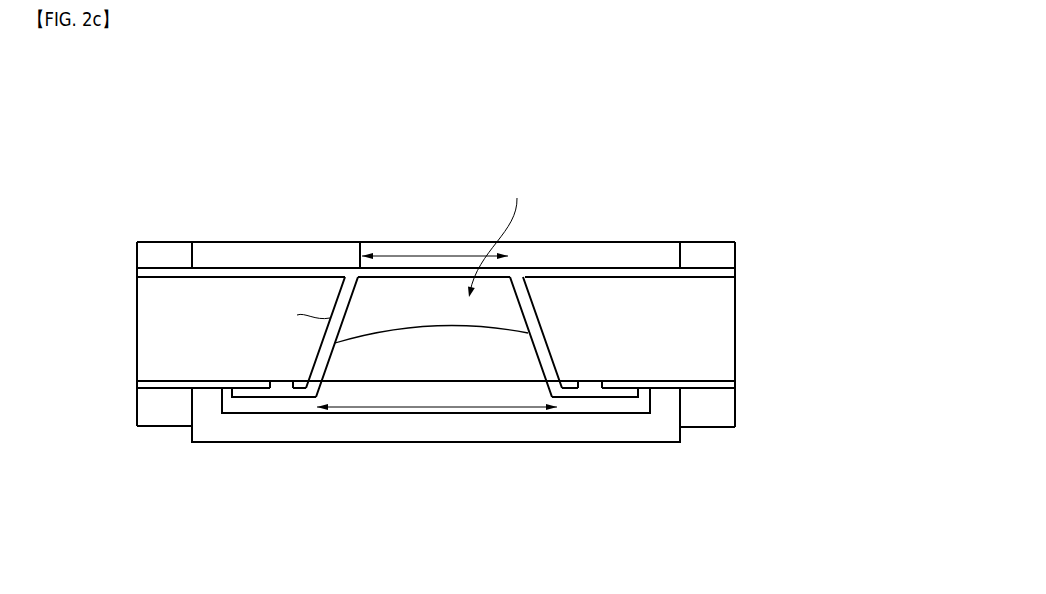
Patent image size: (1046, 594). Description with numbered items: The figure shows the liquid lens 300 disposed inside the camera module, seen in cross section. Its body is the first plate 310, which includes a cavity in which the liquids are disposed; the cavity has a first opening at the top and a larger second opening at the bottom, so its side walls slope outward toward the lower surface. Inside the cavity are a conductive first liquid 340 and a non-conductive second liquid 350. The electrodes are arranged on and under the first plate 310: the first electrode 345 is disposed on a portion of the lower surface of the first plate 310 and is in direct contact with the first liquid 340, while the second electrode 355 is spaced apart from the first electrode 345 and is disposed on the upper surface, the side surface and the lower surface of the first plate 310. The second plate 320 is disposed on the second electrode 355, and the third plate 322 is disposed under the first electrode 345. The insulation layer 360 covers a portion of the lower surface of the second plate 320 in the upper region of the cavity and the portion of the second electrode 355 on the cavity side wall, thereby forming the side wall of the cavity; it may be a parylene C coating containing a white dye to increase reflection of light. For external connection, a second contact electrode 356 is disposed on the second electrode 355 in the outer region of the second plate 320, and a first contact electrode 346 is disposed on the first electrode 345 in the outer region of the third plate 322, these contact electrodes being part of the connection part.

The liquid lens 300 is at (466, 316).
The first plate 310 is at (723, 330).
The second plate 320 is at (605, 258).
The third plate 322 is at (653, 428).
The first liquid 340 is at (497, 385).
The first electrode 345 is at (723, 385).
The first contact electrode 346 is at (723, 413).
The second liquid 350 is at (400, 297).
The second electrode 355 is at (723, 273).
The second contact electrode 356 is at (723, 253).
The insulation layer 360 is at (593, 390).